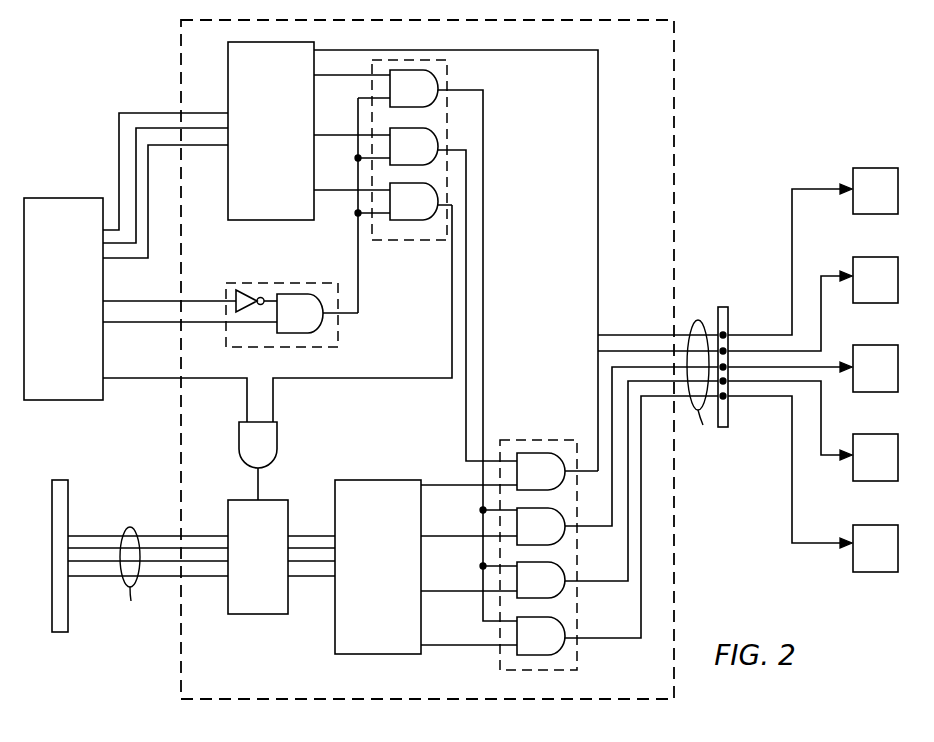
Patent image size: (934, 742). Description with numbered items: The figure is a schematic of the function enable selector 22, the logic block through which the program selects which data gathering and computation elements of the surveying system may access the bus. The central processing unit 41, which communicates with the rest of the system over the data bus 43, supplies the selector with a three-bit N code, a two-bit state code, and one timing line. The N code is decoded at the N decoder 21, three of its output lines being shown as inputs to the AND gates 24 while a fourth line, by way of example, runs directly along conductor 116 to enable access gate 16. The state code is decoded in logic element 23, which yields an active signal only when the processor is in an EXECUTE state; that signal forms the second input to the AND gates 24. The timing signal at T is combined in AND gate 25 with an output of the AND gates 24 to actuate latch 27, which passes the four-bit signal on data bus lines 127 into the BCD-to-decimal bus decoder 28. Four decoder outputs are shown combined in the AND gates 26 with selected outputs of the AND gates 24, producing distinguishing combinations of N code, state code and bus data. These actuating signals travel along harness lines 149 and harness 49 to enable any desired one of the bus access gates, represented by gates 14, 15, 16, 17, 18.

The function enable selector 22 is at (667, 72).
The N decoder 21 is at (260, 181).
The AND gates 24 is at (440, 72).
The logic element 23 is at (333, 336).
The AND gate 25 is at (272, 445).
The central processing unit 41 is at (44, 321).
The data bus 43 is at (63, 507).
The data bus lines 127 is at (148, 578).
The latch 27 is at (247, 582).
The BCD-to-decimal bus decoder 28 is at (367, 615).
The AND gates 26 is at (515, 440).
The harness 49 is at (728, 315).
The harness lines 149 is at (708, 387).
The conductor 116 is at (791, 214).
The gate 16 is at (864, 203).
The gate 18 is at (864, 292).
The gate 15 is at (864, 380).
The gate 17 is at (864, 469).
The gate 14 is at (864, 560).